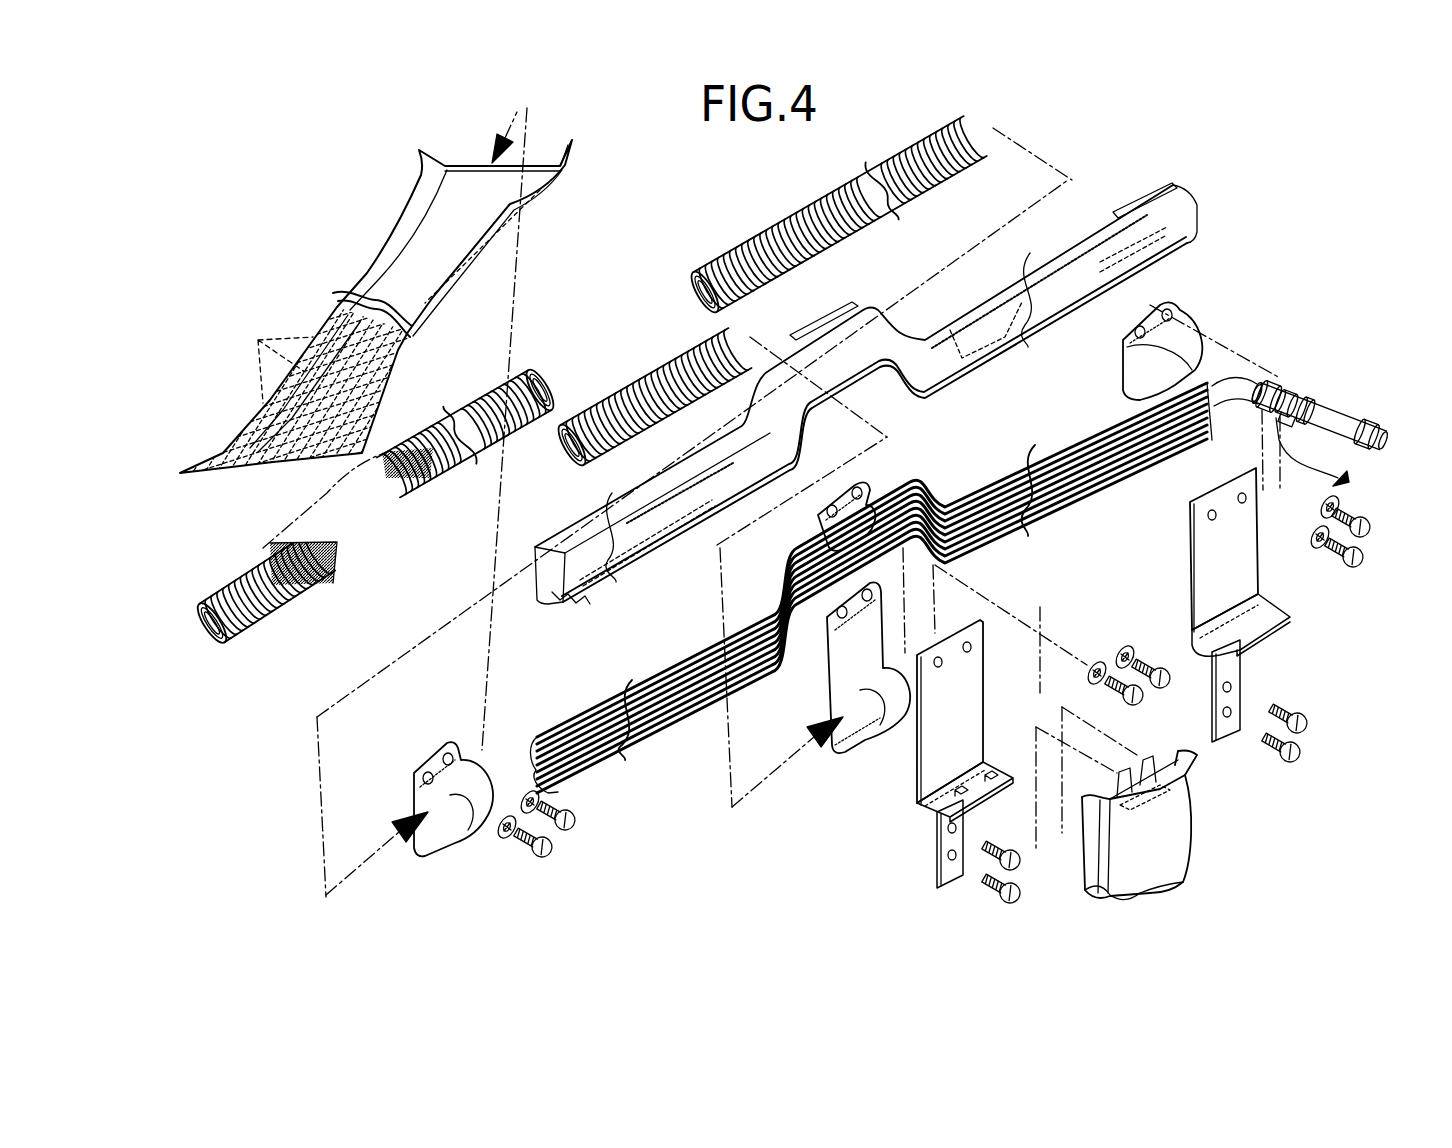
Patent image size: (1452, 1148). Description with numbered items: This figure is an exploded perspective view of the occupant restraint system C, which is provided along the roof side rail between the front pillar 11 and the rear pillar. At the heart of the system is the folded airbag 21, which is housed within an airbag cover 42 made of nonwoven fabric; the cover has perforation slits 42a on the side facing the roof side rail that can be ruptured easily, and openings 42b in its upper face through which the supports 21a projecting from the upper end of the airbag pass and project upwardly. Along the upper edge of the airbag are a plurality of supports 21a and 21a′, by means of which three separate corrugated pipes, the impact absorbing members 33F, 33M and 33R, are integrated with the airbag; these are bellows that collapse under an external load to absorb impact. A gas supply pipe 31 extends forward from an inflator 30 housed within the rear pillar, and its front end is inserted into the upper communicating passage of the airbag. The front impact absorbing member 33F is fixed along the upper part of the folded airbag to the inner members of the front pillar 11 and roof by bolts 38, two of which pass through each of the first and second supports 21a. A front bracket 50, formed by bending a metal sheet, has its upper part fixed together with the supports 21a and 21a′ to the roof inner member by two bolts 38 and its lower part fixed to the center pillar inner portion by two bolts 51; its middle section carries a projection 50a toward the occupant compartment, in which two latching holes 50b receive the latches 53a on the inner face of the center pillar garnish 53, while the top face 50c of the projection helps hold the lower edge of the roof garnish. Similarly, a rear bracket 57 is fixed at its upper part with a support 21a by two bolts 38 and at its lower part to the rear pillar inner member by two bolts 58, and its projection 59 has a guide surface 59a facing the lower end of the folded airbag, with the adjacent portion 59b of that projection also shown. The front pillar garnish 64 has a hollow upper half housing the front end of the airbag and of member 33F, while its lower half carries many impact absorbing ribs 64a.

The front pillar 11 is at (340, 237).
The front pillar garnish 64 is at (391, 220).
The impact absorbing ribs 64a is at (258, 340).
The occupant restraint system C is at (637, 296).
The impact absorbing member 33R is at (802, 208).
The impact absorbing member 33M is at (663, 367).
The impact absorbing member 33F is at (292, 577).
The airbag cover 42 is at (686, 545).
The perforation slits 42a is at (1005, 353).
The openings 42b is at (1143, 201).
The airbag 21 is at (701, 721).
The supports 21a is at (455, 780).
The supports 21a′ is at (843, 690).
The inflator 30 is at (1333, 408).
The gas supply pipe 31 is at (1247, 397).
The bolts 38 is at (557, 860).
The front bracket 50 is at (987, 628).
The projection 50a is at (987, 770).
The latching holes 50b is at (957, 797).
The top face 50c is at (940, 822).
The bolts 51 is at (1022, 896).
The center pillar garnish 53 is at (1187, 838).
The latches 53a is at (1160, 810).
The rear bracket 57 is at (1182, 561).
The bolts 58 is at (1303, 768).
The projection 59 is at (1299, 620).
The guide surface 59a is at (1257, 610).
The bracket tab 59b is at (1257, 645).